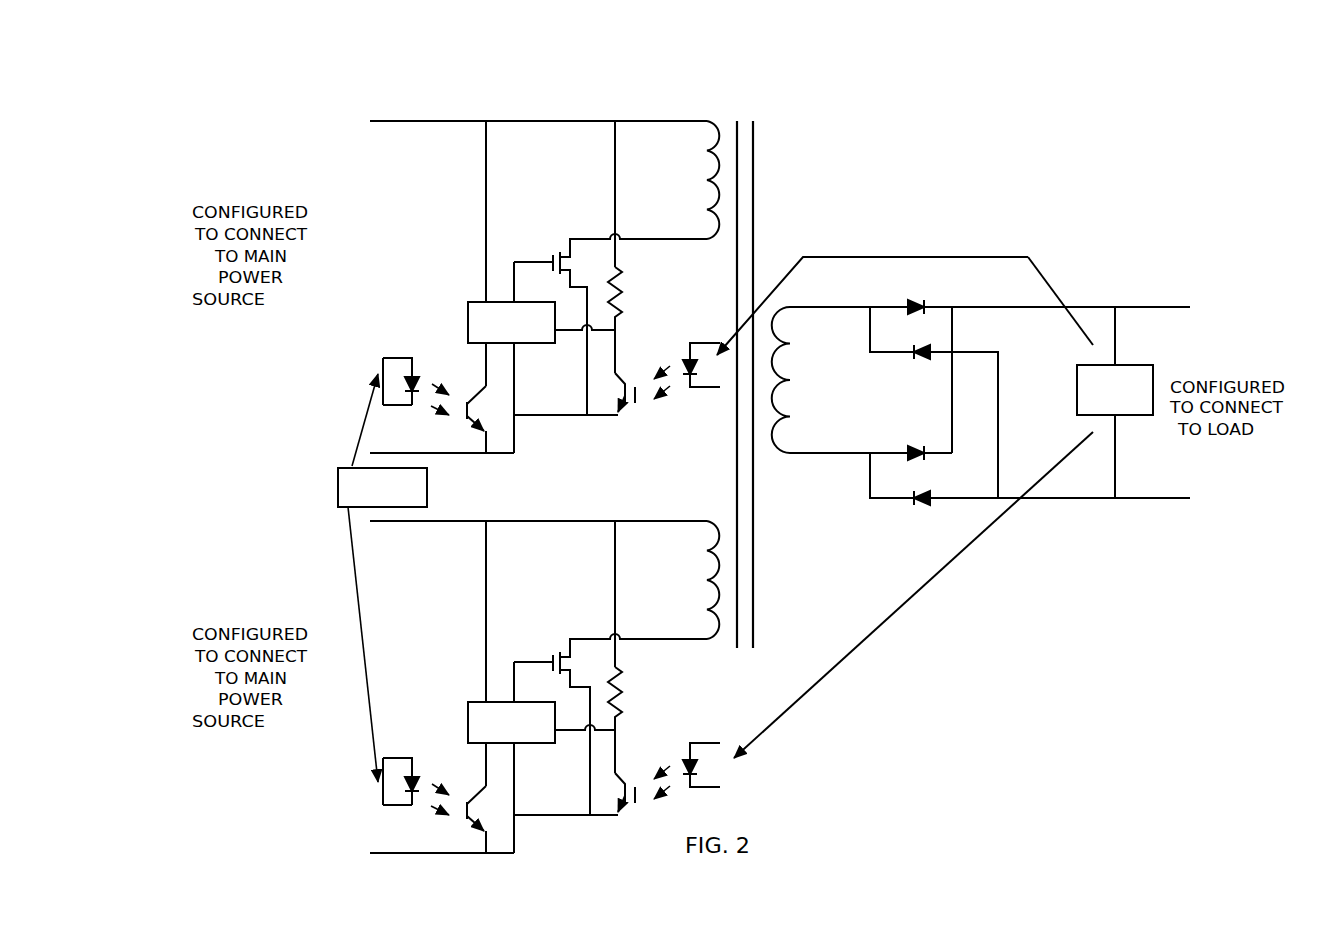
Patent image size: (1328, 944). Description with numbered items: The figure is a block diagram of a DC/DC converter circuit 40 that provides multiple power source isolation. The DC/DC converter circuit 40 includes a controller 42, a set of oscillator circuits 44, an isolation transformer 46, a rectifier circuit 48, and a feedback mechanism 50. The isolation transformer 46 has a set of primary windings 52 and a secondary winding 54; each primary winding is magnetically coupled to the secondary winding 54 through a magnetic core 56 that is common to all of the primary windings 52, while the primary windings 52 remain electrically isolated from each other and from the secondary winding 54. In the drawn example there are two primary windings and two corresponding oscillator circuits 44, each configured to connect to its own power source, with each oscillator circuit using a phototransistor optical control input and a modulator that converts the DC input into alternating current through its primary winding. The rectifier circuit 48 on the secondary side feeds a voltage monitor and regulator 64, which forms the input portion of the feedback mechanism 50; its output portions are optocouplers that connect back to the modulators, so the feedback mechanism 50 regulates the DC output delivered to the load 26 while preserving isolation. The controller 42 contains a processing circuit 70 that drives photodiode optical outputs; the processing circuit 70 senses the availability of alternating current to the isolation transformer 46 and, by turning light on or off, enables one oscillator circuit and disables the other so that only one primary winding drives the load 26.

The DC/DC converter circuit 40 is at (224, 90).
The controller 42 is at (270, 388).
The set of oscillator circuits 44 is at (294, 152).
The isolation transformer 46 is at (660, 90).
The rectifier circuit 48 is at (838, 493).
The feedback mechanism 50 is at (992, 226).
The set of primary windings 52 is at (724, 112).
The secondary winding 54 is at (796, 380).
The magnetic core 56 is at (771, 184).
The voltage monitor and regulator 64 is at (1115, 402).
The processing circuit 70 is at (382, 487).
The load 26 is at (1268, 429).